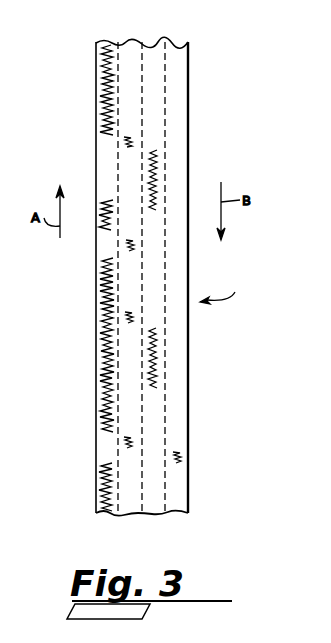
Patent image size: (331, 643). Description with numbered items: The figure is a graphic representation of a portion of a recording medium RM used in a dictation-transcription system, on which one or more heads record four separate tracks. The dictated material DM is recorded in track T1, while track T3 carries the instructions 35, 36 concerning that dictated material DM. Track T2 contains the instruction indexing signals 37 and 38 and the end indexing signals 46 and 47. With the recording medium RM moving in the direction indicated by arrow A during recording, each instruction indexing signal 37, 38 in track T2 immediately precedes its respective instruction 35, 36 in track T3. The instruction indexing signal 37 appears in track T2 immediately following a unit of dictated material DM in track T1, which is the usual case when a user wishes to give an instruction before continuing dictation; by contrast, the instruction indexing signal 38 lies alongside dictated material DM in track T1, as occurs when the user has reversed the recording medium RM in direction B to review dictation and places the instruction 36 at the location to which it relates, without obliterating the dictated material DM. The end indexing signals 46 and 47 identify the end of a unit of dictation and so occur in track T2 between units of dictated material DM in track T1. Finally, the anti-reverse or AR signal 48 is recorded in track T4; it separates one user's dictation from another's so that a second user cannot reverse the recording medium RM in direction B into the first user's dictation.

The instruction 35 is at (157, 170).
The instruction 36 is at (157, 356).
The instruction indexing signal 37 is at (128, 141).
The instruction indexing signal 38 is at (133, 318).
The end indexing signal 46 is at (130, 245).
The end indexing signal 47 is at (129, 441).
The anti-reverse (AR) signal 48 is at (181, 460).
The dictated material DM is at (102, 371).
The recording medium RM is at (221, 290).
The track T1 is at (106, 514).
The track T2 is at (134, 515).
The track T3 is at (151, 515).
The track T4 is at (188, 513).